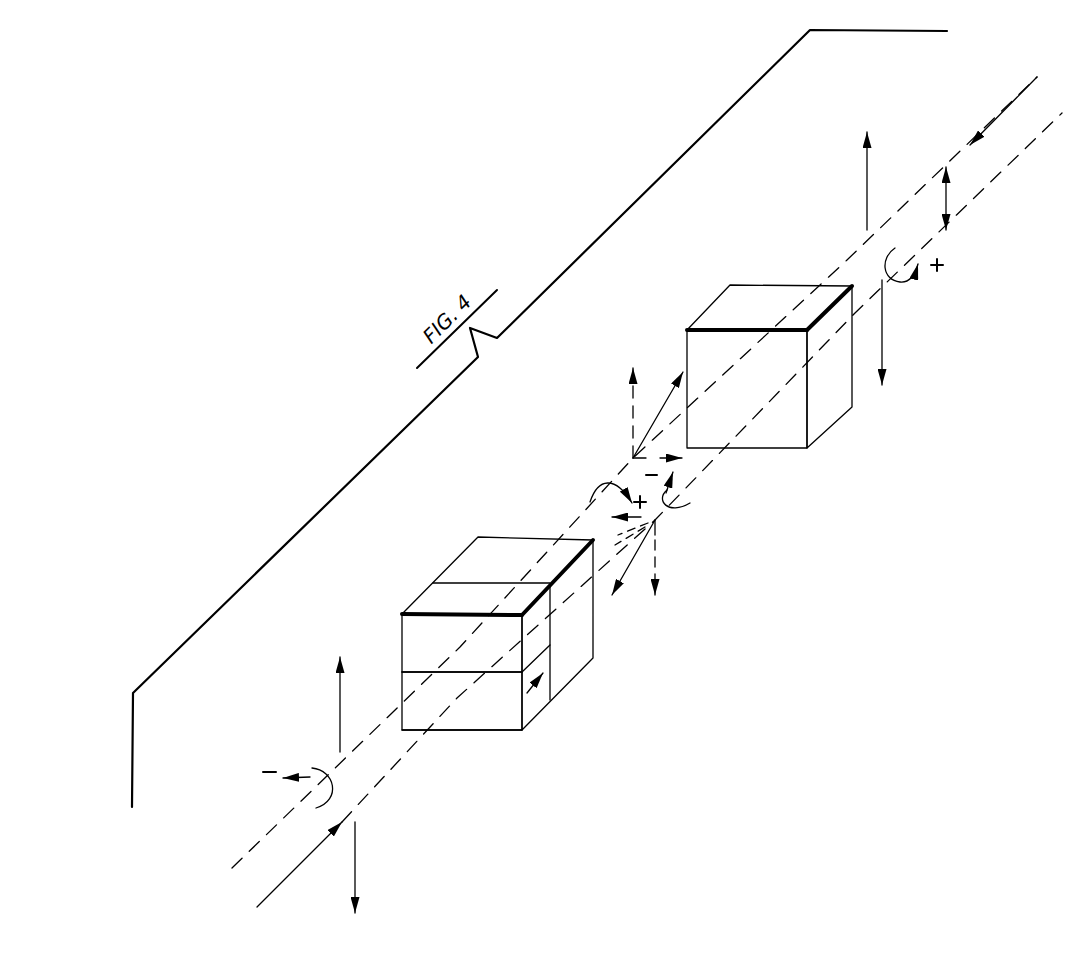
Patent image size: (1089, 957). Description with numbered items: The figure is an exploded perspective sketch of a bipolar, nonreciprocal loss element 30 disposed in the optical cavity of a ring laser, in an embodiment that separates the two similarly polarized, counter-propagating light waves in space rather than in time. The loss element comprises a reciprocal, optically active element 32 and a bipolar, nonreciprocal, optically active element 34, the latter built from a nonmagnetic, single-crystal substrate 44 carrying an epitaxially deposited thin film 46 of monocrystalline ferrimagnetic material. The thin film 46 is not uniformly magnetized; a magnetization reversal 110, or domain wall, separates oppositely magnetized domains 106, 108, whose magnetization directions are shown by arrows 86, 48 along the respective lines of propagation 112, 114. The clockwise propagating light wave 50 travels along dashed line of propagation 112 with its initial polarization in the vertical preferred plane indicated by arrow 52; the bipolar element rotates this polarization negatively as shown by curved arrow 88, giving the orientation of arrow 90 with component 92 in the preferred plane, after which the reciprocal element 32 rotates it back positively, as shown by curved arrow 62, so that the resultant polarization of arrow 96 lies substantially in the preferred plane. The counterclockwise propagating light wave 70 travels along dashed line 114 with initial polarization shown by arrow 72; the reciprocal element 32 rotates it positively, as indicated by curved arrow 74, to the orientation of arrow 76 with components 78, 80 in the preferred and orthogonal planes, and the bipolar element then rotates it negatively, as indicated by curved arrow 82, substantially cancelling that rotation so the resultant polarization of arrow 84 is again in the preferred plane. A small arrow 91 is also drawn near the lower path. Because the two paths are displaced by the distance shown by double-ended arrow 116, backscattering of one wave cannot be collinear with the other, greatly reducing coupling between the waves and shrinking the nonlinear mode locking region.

The bipolar, nonreciprocal loss element 30 is at (568, 342).
The reciprocal, optically active element 32 is at (830, 415).
The bipolar, nonreciprocal, optically active element 34 is at (468, 533).
The nonmagnetic, single-crystal substrate 44 is at (565, 663).
The thin film of monocrystalline, ferrimagnetic material 46 is at (440, 593).
The arrow 48 is at (527, 633).
The clockwise propagating light wave 50 is at (303, 862).
The arrow 52 is at (356, 848).
The curved arrow 62 is at (901, 252).
The counterclockwise propagating light wave 70 is at (1010, 100).
The arrow 72 is at (867, 175).
The curved arrow 74 is at (596, 494).
The arrow 76 is at (688, 396).
The component 78 is at (628, 404).
The component 80 is at (658, 460).
The curved arrow 82 is at (298, 803).
The arrow 84 is at (340, 708).
The arrow 86 is at (528, 692).
The curved arrow 88 is at (690, 503).
The arrow 90 is at (633, 567).
The horizontal vector 91 is at (640, 518).
The component 92 is at (663, 548).
The arrow 96 is at (882, 335).
The domain 106 is at (420, 643).
The domain 108 is at (488, 713).
The magnetization reversal 110 is at (408, 678).
The line of propagation 112 is at (962, 210).
The line of propagation 114 is at (263, 833).
The double-ended arrow 116 is at (950, 190).